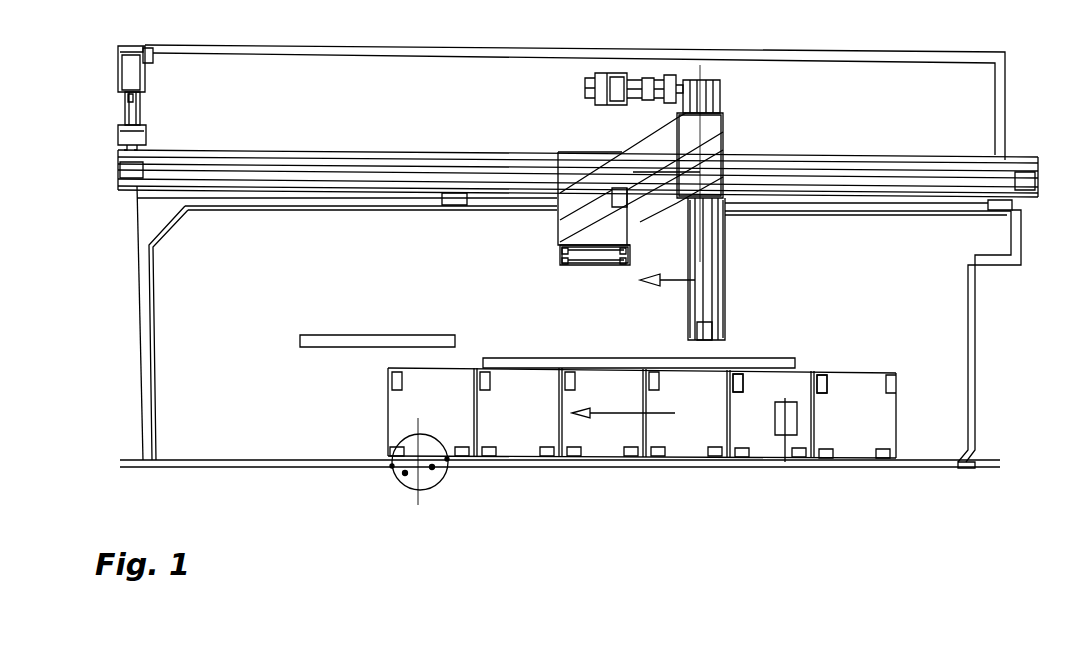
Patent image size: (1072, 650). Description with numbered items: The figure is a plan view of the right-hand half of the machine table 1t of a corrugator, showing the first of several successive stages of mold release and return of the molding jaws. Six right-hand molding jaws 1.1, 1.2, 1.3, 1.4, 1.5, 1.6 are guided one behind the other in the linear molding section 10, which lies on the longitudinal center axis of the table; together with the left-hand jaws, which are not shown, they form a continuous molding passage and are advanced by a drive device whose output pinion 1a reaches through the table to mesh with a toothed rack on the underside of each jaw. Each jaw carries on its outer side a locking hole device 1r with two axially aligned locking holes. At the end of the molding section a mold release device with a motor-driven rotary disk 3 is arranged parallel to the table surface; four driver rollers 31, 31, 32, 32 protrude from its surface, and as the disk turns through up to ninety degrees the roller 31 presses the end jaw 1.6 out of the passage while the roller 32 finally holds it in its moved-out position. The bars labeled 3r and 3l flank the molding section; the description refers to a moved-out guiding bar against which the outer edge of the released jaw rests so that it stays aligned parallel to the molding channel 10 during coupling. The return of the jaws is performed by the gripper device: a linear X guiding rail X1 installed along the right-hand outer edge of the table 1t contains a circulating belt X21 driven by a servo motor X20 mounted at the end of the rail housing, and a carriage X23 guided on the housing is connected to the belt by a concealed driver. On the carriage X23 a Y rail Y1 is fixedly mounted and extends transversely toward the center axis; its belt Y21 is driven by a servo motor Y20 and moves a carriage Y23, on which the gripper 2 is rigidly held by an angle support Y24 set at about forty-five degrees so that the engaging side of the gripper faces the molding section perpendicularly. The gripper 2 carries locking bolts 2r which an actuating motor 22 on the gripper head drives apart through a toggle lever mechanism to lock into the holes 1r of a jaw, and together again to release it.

The machine table 1t is at (948, 334).
The servo motor X20 is at (120, 112).
The X guiding rail X1 is at (408, 152).
The belt X21 is at (344, 176).
The carriage X23 is at (572, 160).
The servo motor Y20 is at (630, 80).
The angle support Y24 is at (643, 153).
The carriage Y23 is at (725, 140).
The Y guiding rail Y1 is at (725, 252).
The circulating belt Y21 is at (725, 302).
The gripper 2 is at (570, 233).
The actuating motor 22 is at (566, 240).
The locking bolt device 2r is at (562, 258).
The rear shelf 3r is at (370, 335).
The left shelf 3l is at (570, 365).
The linear molding section 10 is at (652, 503).
The molding jaw 1.1 is at (856, 415).
The molding jaw 1.2 is at (773, 414).
The molding jaw 1.3 is at (689, 413).
The molding jaw 1.4 is at (620, 413).
The molding jaw 1.5 is at (521, 412).
The molding jaw 1.6 is at (432, 412).
The output pinion 1a is at (778, 428).
The locking hole device 1r is at (800, 378).
The rotary disk 3 is at (438, 486).
The driver roller 31 is at (432, 470).
The driver roller 32 is at (392, 467).